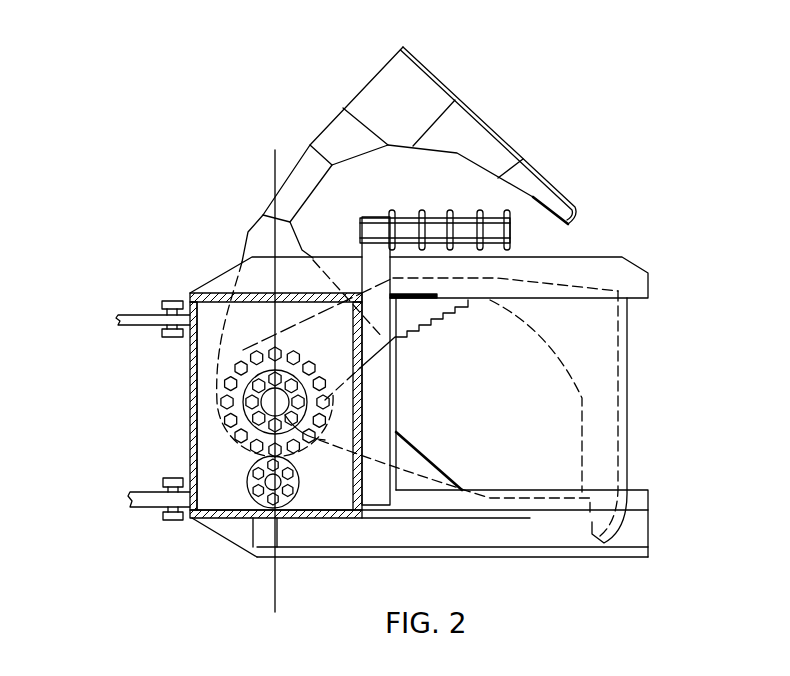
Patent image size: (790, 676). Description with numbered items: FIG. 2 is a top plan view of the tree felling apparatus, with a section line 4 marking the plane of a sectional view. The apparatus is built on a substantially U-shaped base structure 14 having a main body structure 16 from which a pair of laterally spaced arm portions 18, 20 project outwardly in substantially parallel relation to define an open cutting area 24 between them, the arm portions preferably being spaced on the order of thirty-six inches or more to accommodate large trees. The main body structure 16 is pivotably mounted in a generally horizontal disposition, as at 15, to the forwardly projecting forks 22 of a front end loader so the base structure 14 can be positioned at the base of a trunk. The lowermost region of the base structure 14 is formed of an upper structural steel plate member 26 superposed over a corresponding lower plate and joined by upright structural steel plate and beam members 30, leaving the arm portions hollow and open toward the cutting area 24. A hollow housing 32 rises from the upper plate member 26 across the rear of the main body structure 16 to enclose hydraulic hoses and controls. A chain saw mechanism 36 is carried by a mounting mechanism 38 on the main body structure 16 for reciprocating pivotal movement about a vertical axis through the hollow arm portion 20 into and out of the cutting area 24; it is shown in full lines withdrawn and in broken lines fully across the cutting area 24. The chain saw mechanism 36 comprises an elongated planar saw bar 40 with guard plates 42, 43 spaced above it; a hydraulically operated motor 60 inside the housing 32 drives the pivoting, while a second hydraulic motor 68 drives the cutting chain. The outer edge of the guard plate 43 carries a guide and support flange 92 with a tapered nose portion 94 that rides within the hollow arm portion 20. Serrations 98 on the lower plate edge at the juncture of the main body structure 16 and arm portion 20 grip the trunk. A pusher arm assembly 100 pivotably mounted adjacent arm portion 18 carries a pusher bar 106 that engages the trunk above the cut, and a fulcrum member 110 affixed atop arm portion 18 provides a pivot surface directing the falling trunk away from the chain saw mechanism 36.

The section line 4- 4 is at (280, 165).
The base structure 14 is at (210, 548).
The pivotable mounting 15 is at (175, 300).
The main body structure 16 is at (198, 412).
The arm portion 18 is at (535, 557).
The arm portion 20 is at (603, 262).
The forks 22 is at (122, 324).
The open cutting area 24 is at (633, 401).
The upper structural steel plate member 26 is at (228, 488).
The upright structural steel plate and beam members 30 is at (236, 536).
The hollow housing 32 is at (212, 368).
The chain saw mechanism 36 is at (322, 104).
The mounting mechanism 38 is at (210, 444).
The saw bar 40 is at (432, 191).
The guard plate 42 is at (258, 242).
The guard plate 43 is at (466, 147).
The hydraulically operated motor 60 is at (282, 480).
The hydraulic motor 68 is at (317, 432).
The guide and support flange 92 is at (500, 128).
The tapered nose portion 94 is at (578, 211).
The serrations 98 is at (427, 316).
The pusher arm assembly 100 is at (378, 387).
The pusher bar 106 is at (435, 228).
The fulcrum member 110 is at (440, 546).